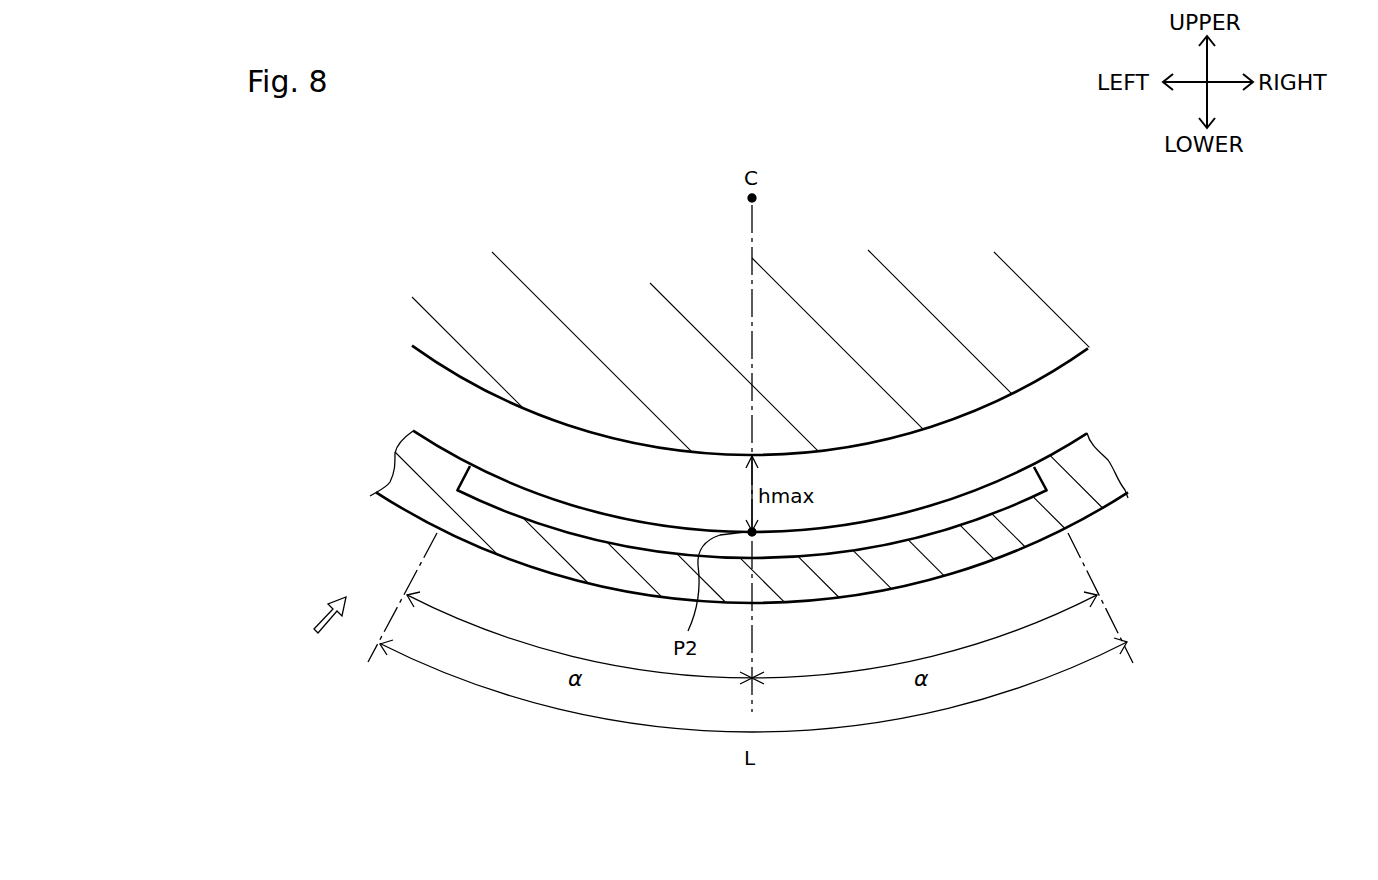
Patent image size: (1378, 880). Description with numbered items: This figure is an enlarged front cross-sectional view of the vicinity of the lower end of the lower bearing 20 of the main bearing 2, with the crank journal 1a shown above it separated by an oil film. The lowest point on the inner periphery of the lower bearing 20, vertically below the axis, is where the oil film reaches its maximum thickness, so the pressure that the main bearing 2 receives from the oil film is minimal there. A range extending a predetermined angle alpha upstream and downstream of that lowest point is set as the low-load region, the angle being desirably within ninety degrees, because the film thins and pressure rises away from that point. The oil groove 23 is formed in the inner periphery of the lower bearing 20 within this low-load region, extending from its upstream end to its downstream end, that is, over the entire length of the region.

The crank journal 1a is at (635, 281).
The lower bearing 20 is at (392, 517).
The oil groove 23 is at (927, 517).
The main bearing 2 is at (322, 623).